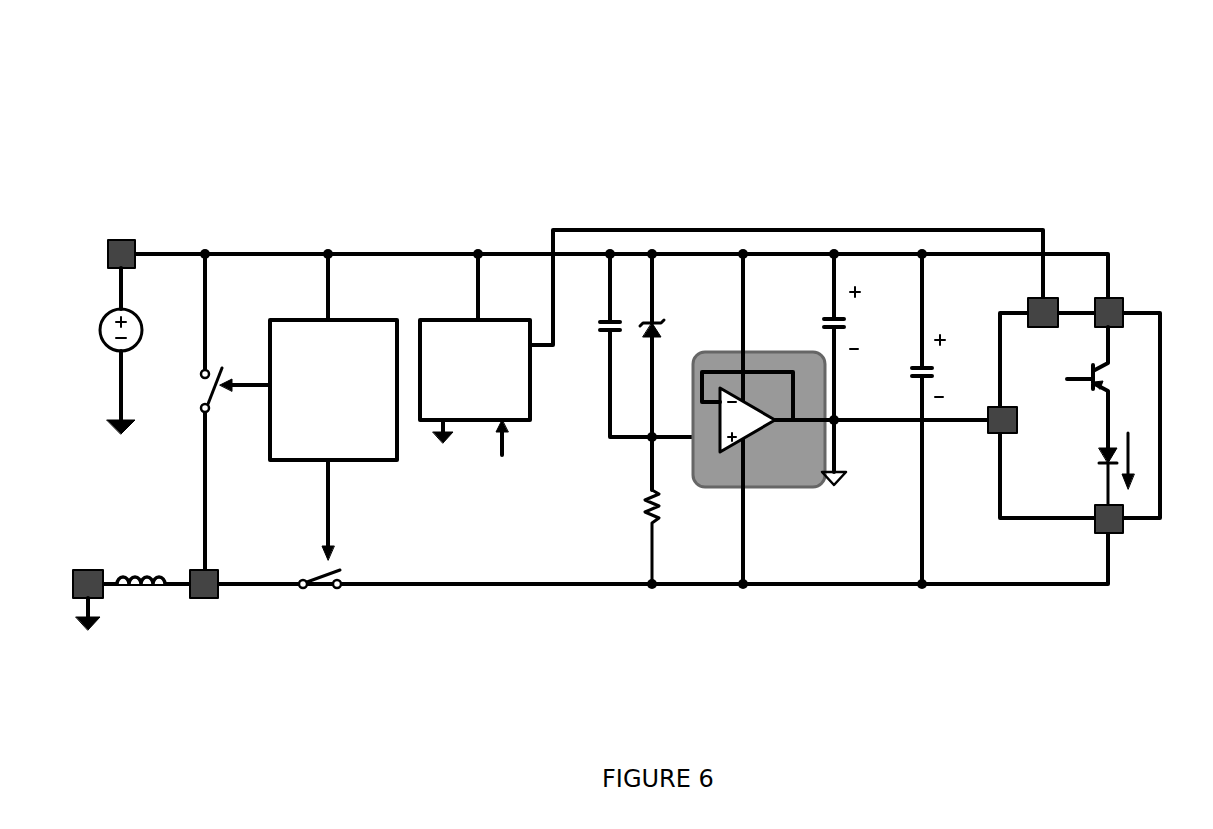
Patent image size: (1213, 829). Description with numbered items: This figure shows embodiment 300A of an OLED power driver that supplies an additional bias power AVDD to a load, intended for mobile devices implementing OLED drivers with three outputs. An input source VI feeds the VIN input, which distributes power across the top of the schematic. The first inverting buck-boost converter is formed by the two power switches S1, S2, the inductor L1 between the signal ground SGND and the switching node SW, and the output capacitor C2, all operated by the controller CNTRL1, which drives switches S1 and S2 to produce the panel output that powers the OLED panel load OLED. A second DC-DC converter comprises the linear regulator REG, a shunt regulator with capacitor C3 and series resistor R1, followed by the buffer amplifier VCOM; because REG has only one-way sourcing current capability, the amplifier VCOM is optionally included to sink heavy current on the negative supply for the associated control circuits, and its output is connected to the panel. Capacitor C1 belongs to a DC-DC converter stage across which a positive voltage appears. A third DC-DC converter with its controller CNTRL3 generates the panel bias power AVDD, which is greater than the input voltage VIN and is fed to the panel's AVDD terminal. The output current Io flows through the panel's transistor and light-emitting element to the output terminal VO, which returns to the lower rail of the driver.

The embodiment of OLED power driver 300A is at (1037, 143).
The input voltage terminal VIN is at (99, 256).
The input voltage source VI is at (102, 351).
The first power switch S1 is at (217, 412).
The second power switch S2 is at (320, 595).
The controller of first inverting buck-boost converter CNTRL1 is at (333, 407).
The controller of third DC-DC converter CNTRL3 is at (475, 368).
The signal ground terminal SGND is at (90, 587).
The inductor L1 is at (141, 599).
The switch node terminal SW is at (204, 595).
The third capacitor C3 is at (649, 345).
The linear regulator REG is at (670, 372).
The resistor R1 is at (634, 537).
The buffer amplifier VCOM is at (840, 419).
The first capacitor C1 is at (834, 337).
The second capacitor C2 is at (935, 419).
The OLED panel load OLED is at (1068, 420).
The panel bias power AVDD is at (1017, 303).
The output current Io is at (1137, 461).
The output terminal VO is at (1124, 533).